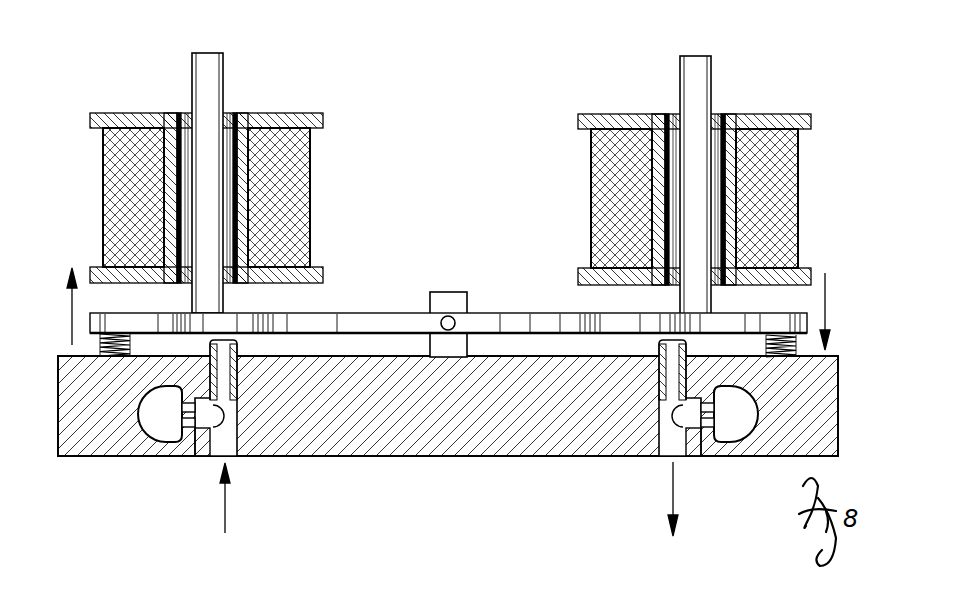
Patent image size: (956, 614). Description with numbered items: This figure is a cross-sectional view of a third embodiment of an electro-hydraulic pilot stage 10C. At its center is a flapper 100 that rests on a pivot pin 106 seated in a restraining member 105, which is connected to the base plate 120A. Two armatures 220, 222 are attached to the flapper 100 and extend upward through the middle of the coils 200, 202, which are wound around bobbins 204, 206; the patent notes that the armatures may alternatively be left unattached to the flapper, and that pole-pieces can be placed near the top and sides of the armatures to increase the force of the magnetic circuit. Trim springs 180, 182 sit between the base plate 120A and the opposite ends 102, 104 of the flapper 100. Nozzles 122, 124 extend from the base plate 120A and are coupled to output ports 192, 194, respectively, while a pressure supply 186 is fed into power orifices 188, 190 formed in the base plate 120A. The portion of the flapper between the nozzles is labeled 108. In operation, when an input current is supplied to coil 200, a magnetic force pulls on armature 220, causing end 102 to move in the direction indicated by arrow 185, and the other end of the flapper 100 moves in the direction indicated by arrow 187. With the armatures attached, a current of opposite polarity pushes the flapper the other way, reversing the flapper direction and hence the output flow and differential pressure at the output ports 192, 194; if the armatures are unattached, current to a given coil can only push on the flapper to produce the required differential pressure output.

The pilot stage 10C is at (130, 82).
The flapper 100 is at (410, 313).
The end of flapper 102 is at (90, 320).
The end of flapper 104 is at (810, 320).
The restraining member 105 is at (458, 303).
The pivot pin 106 is at (447, 316).
The armature central portion 108 is at (517, 318).
The base plate 120A is at (390, 456).
The nozzle 122 is at (330, 318).
The nozzle 124 is at (597, 330).
The trim spring 180 is at (100, 343).
The trim spring 182 is at (800, 353).
The arrow 185 is at (72, 272).
The pressure supply 186 is at (153, 428).
The arrow 187 is at (825, 293).
The power orifice 188 is at (190, 428).
The power orifice 190 is at (705, 430).
The output port 192 is at (225, 442).
The output port 194 is at (675, 440).
The coil 200 is at (293, 143).
The coil 202 is at (603, 143).
The bobbin 204 is at (270, 117).
The bobbin 206 is at (627, 118).
The armature 220 is at (210, 73).
The armature 222 is at (688, 73).